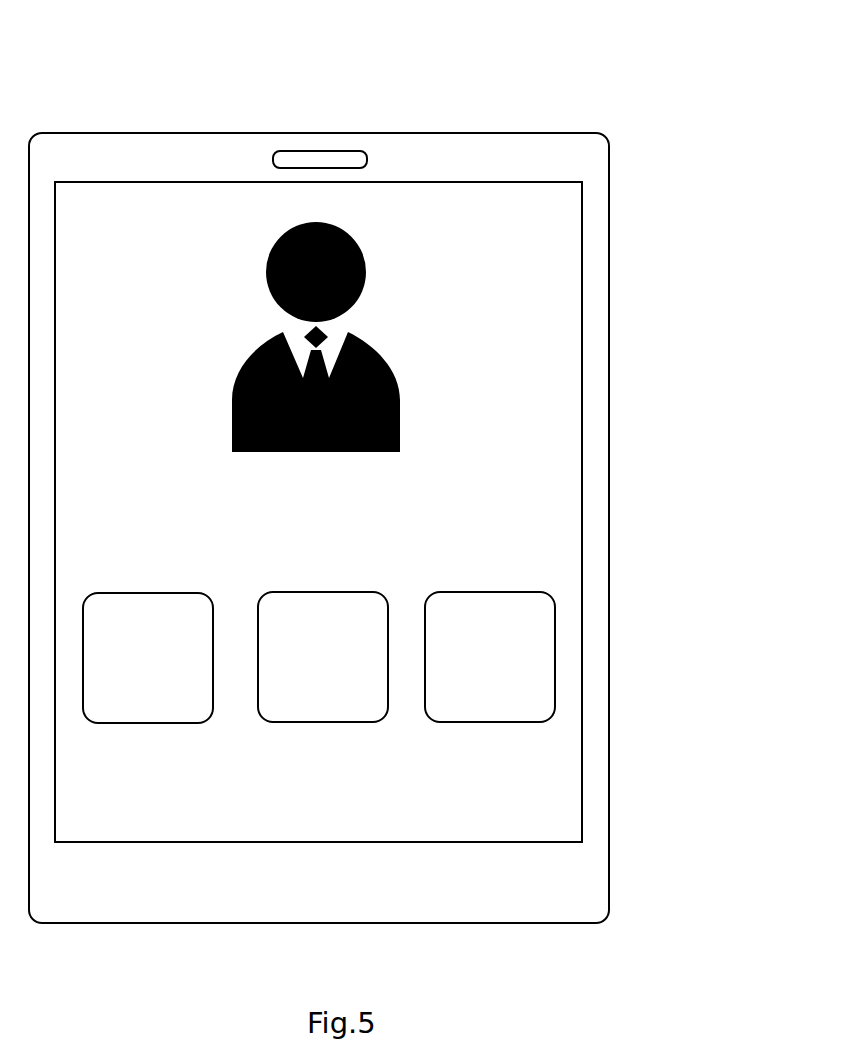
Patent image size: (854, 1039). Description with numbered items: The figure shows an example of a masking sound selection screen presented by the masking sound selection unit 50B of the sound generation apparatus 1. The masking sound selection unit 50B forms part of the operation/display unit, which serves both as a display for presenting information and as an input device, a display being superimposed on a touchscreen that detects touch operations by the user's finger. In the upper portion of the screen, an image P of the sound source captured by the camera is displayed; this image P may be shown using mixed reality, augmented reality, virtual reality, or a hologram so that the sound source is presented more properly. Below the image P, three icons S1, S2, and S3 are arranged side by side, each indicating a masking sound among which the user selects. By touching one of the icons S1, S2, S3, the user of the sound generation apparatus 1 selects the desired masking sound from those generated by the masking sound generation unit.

The sound generation apparatus 1 is at (676, 136).
The masking sound selection unit 50B is at (547, 235).
The image of the sound source P is at (319, 495).
The icon S1 is at (167, 674).
The icon S2 is at (346, 674).
The icon S3 is at (514, 674).